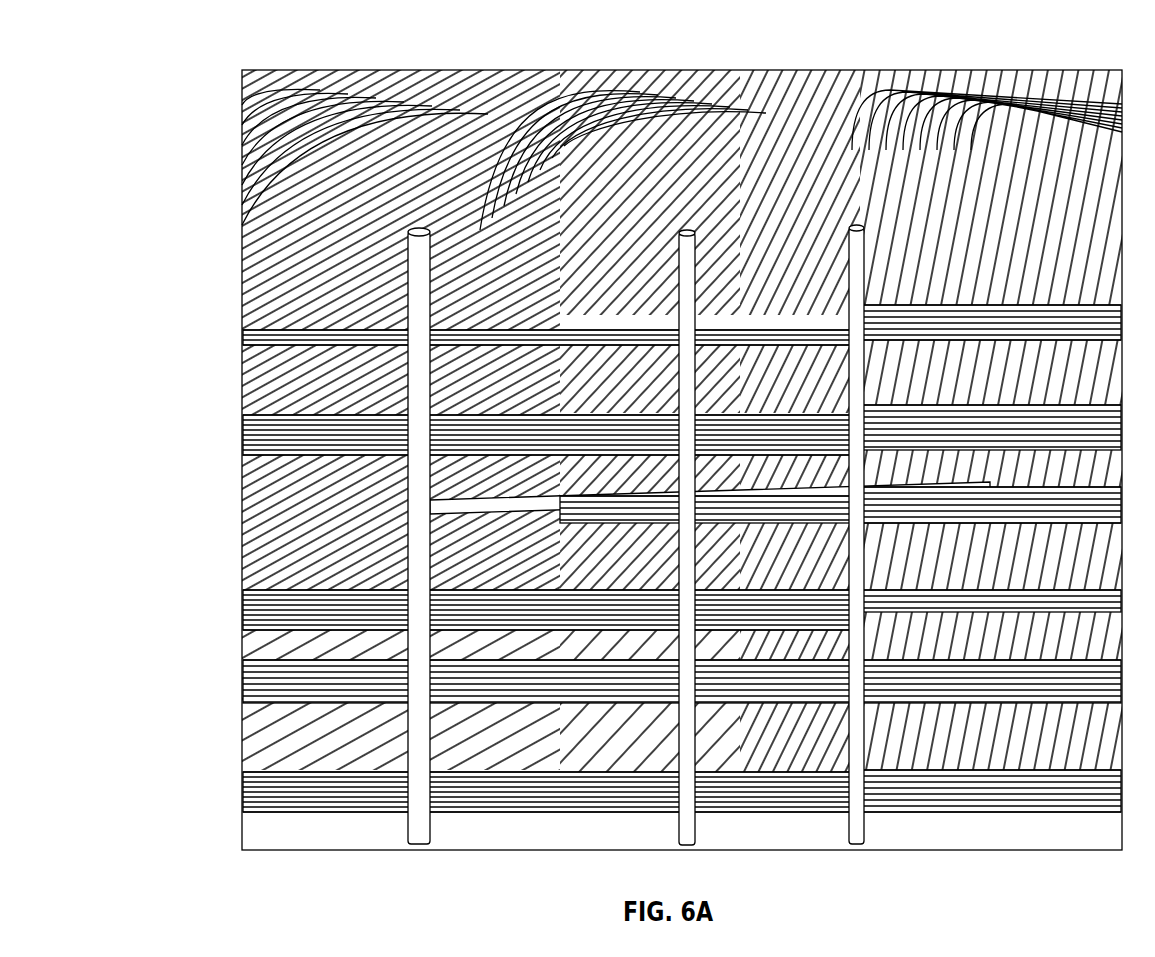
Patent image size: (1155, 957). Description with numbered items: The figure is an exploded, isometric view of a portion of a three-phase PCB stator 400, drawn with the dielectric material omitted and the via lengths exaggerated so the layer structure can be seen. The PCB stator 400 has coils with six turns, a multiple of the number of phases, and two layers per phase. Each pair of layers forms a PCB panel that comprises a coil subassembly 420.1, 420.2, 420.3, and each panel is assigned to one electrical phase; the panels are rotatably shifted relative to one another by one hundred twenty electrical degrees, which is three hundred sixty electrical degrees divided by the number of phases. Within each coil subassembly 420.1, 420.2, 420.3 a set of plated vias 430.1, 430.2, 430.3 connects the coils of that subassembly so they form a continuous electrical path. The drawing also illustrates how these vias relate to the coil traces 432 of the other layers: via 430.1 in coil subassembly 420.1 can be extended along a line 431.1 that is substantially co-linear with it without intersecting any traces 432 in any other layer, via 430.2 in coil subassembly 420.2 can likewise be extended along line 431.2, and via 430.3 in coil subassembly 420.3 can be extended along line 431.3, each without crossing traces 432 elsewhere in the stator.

The PCB stator 400 is at (977, 36).
The coil subassembly 420.1 is at (236, 456).
The coil subassembly 420.2 is at (236, 632).
The coil subassembly 420.3 is at (236, 809).
The plated via 430.1 is at (426, 366).
The plated via 430.2 is at (640, 578).
The plated via 430.3 is at (862, 714).
The line 431.1 is at (408, 522).
The line 431.2 is at (679, 240).
The line 431.3 is at (864, 533).
The traces 432 is at (886, 177).